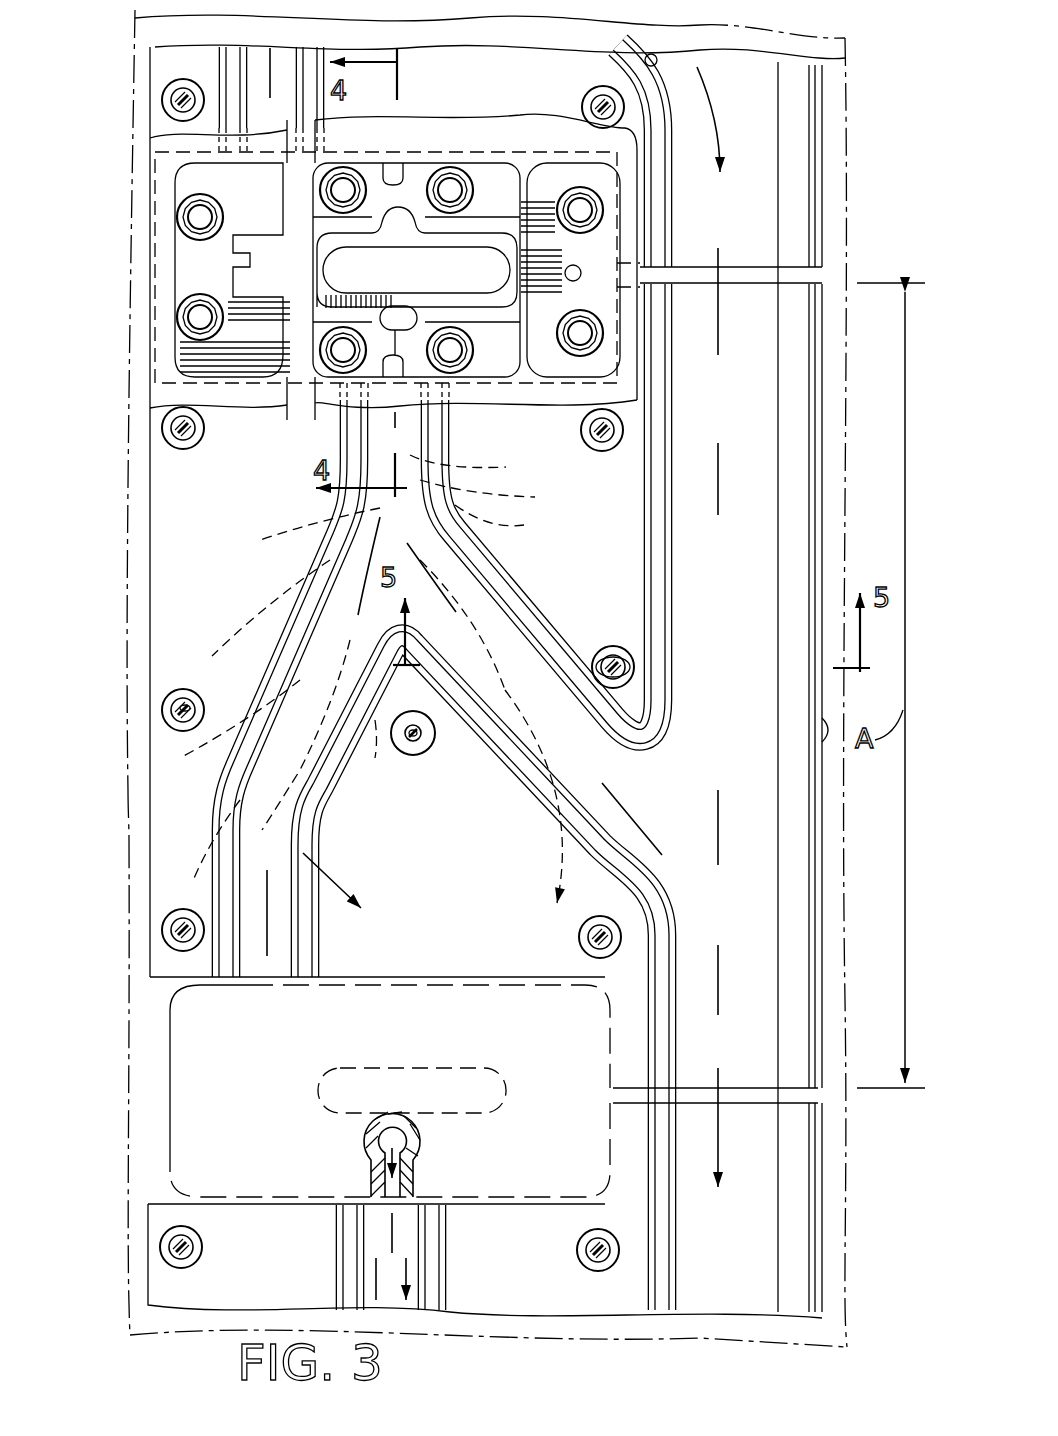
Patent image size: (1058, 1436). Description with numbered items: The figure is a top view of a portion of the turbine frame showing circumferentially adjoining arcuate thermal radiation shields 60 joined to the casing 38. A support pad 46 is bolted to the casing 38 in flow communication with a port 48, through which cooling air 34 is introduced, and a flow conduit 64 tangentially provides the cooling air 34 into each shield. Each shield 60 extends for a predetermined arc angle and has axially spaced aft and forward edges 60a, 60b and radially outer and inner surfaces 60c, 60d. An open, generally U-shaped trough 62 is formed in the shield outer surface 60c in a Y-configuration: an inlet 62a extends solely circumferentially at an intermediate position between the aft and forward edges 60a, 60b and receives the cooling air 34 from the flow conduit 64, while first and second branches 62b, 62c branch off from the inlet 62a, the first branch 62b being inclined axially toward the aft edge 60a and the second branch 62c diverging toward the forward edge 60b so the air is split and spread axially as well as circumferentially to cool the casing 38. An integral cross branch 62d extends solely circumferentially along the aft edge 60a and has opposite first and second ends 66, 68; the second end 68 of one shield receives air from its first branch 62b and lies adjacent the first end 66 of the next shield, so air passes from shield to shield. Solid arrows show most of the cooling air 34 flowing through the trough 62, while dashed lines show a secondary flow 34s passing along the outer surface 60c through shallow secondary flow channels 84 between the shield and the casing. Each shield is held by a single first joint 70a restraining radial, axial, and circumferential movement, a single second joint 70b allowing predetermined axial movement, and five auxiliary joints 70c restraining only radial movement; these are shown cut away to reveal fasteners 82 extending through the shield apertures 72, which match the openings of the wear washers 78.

The cooling air 34 is at (732, 140).
The secondary flow 34s is at (385, 679).
The casing 38 is at (846, 66).
The support pad 46 is at (170, 1078).
The port 48 is at (323, 277).
The thermal radiation shield 60 is at (824, 240).
The shield aft edge 60a is at (820, 732).
The shield forward edge 60b is at (137, 762).
The shield outer surface 60c is at (175, 826).
The shield inner surface 60d is at (150, 882).
The trough 62 is at (292, 600).
The trough inlet 62a is at (447, 420).
The first branch 62b is at (645, 69).
The second branch 62c is at (258, 62).
The cross branch 62d is at (773, 94).
The flow conduit 64 is at (403, 307).
The cross branch first end 66 is at (733, 288).
The cross branch second end 68 is at (730, 262).
The first joint 70a is at (405, 758).
The second joint 70b is at (613, 642).
The auxiliary joint 70c is at (173, 452).
The shield aperture 72 is at (196, 702).
The wear washer 78 is at (172, 706).
The fastener 82 is at (192, 698).
The secondary flow channel 84 is at (277, 470).